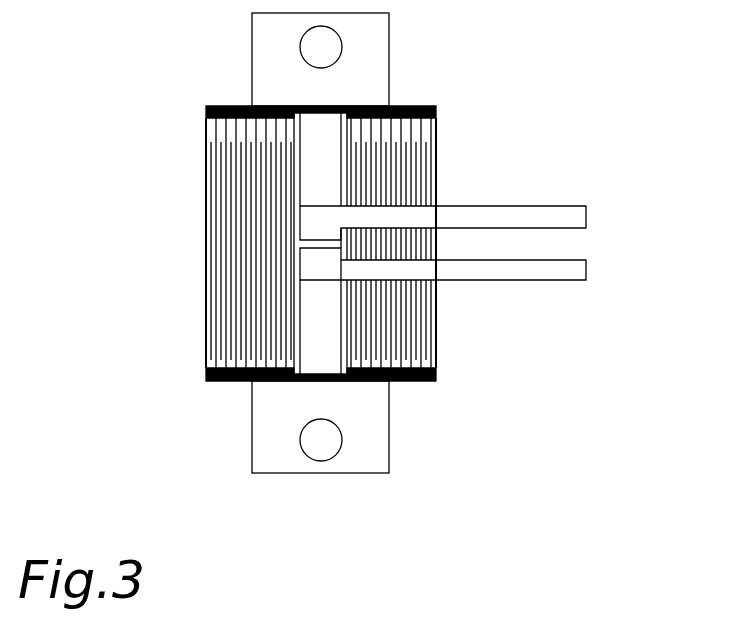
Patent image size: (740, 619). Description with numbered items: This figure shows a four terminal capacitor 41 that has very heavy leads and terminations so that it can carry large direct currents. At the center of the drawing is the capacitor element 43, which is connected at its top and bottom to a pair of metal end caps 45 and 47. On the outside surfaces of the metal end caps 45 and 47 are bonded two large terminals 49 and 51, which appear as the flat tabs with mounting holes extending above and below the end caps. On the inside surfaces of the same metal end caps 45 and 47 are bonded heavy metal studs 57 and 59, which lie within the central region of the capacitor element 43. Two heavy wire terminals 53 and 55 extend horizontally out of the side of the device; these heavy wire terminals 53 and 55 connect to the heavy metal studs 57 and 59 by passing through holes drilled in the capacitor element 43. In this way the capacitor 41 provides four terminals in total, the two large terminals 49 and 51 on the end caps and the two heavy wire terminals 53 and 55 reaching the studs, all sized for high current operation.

The capacitor 41 is at (137, 265).
The capacitor element 43 is at (450, 164).
The metal end cap 45 is at (437, 106).
The metal end cap 47 is at (440, 385).
The large terminal 49 is at (236, 61).
The large terminal 51 is at (230, 462).
The heavy wire terminal 53 is at (556, 190).
The heavy wire terminal 55 is at (549, 300).
The heavy metal stud 57 is at (303, 177).
The heavy metal stud 59 is at (303, 318).